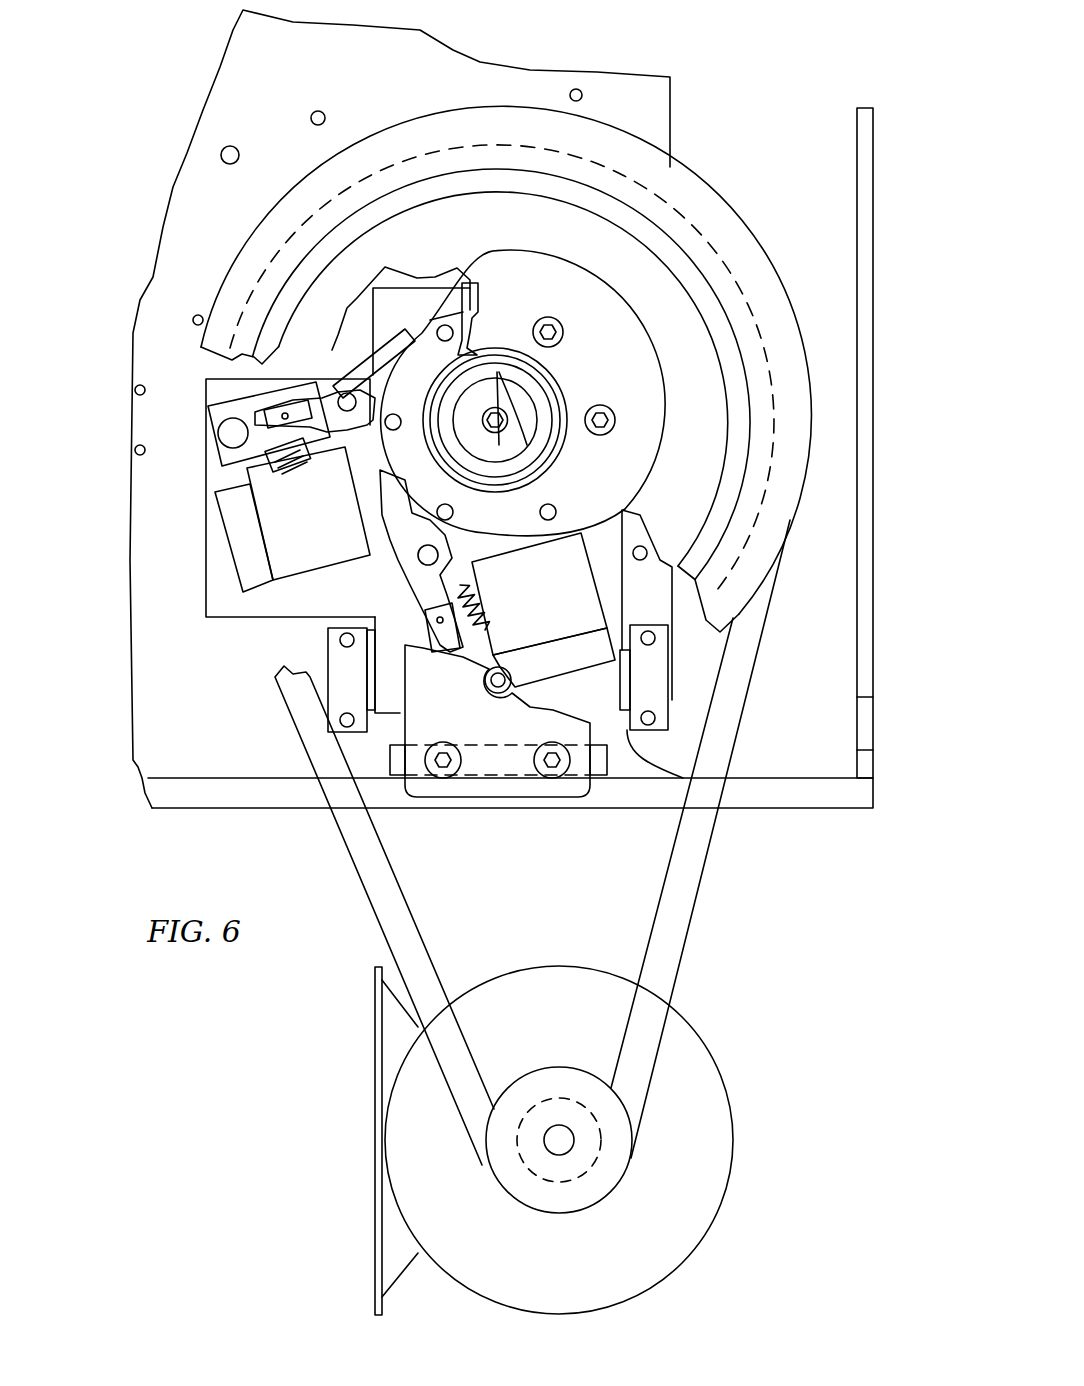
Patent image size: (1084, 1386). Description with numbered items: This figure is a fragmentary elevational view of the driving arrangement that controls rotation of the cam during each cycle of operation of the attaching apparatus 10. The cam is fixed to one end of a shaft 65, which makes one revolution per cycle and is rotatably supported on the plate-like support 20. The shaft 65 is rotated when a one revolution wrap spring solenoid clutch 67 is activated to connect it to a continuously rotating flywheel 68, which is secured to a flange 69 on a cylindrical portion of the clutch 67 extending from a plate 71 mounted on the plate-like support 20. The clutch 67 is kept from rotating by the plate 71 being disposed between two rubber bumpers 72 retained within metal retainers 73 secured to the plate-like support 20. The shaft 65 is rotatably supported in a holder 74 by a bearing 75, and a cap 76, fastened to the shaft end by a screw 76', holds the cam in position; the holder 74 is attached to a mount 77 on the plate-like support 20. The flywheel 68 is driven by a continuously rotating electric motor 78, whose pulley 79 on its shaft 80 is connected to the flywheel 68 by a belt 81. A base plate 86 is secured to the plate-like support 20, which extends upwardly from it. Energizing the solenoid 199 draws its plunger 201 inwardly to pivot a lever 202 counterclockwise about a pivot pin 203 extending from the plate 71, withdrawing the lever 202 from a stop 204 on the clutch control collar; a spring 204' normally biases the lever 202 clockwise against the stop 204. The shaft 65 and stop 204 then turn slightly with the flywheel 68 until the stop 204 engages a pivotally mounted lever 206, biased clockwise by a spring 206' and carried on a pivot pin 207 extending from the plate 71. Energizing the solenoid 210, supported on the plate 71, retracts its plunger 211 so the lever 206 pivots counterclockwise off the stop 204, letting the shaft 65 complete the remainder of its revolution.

The attaching apparatus 10 is at (594, 64).
The plate-like support 20 is at (655, 78).
The shaft 65 is at (520, 425).
The one revolution wrap spring solenoid clutch 67 is at (340, 620).
The flywheel 68 is at (707, 192).
The flange 69 is at (622, 510).
The plate 71 is at (378, 730).
The rubber bumpers 72 is at (663, 778).
The metal retainers 73 is at (677, 712).
The holder 74 is at (533, 798).
The bearing 75 is at (478, 352).
The cap 76 is at (509, 393).
The screw 76' is at (565, 388).
The mount 77 is at (607, 758).
The electric motor 78 is at (728, 1097).
The pulley 79 is at (555, 1065).
The motor shaft 80 is at (567, 1155).
The belt 81 is at (673, 993).
The base plate 86 is at (815, 808).
The solenoid 199 is at (252, 522).
The plunger 201 is at (215, 428).
The lever 202 is at (372, 355).
The pivot pin 203 is at (338, 400).
The stop 204 is at (401, 287).
The spring 204' is at (181, 465).
The pivotally mounted lever 206 is at (399, 561).
The spring 206' is at (490, 618).
The pivot pin 207 is at (366, 619).
The solenoid 210 is at (620, 608).
The plunger 211 is at (397, 638).